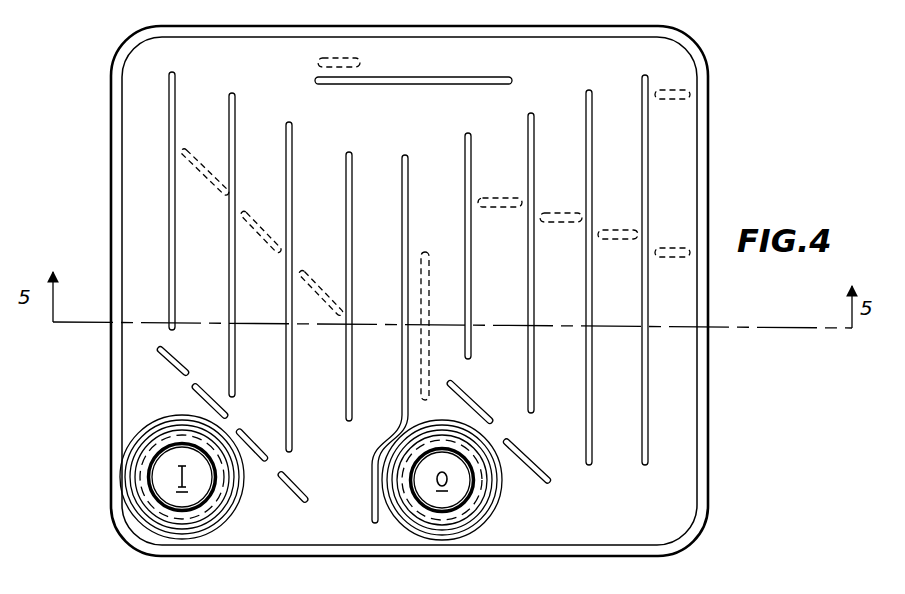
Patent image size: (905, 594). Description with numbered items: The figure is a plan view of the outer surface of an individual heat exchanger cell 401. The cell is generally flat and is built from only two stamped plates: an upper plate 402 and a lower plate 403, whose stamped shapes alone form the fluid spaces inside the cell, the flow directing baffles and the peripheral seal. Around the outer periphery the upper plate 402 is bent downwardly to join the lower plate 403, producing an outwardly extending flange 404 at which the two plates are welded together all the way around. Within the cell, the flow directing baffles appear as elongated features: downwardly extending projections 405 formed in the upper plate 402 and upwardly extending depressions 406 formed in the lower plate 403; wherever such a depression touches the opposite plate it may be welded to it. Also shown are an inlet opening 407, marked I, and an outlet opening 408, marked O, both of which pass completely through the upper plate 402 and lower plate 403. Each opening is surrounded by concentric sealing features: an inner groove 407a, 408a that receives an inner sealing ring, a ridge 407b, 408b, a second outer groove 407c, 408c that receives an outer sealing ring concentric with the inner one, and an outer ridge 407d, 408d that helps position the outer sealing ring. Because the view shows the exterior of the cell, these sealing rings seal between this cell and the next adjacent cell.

The heat exchanger cell 401 is at (620, 22).
The upper plate 402 is at (642, 530).
The lower plate 403 is at (667, 147).
The outwardly extending flange 404 is at (703, 196).
The downwardly extending projections 405 is at (401, 178).
The upwardly extending depressions 406 is at (183, 148).
The inlet opening 407 is at (167, 460).
The inner groove 407a is at (174, 444).
The ridge 407b is at (155, 438).
The second outer groove 407c is at (135, 462).
The outer ridge 407d is at (128, 483).
The outlet opening 408 is at (439, 502).
The inner groove 408a is at (418, 507).
The ridge 408b is at (444, 524).
The second outer groove 408c is at (472, 520).
The outer ridge 408d is at (517, 480).